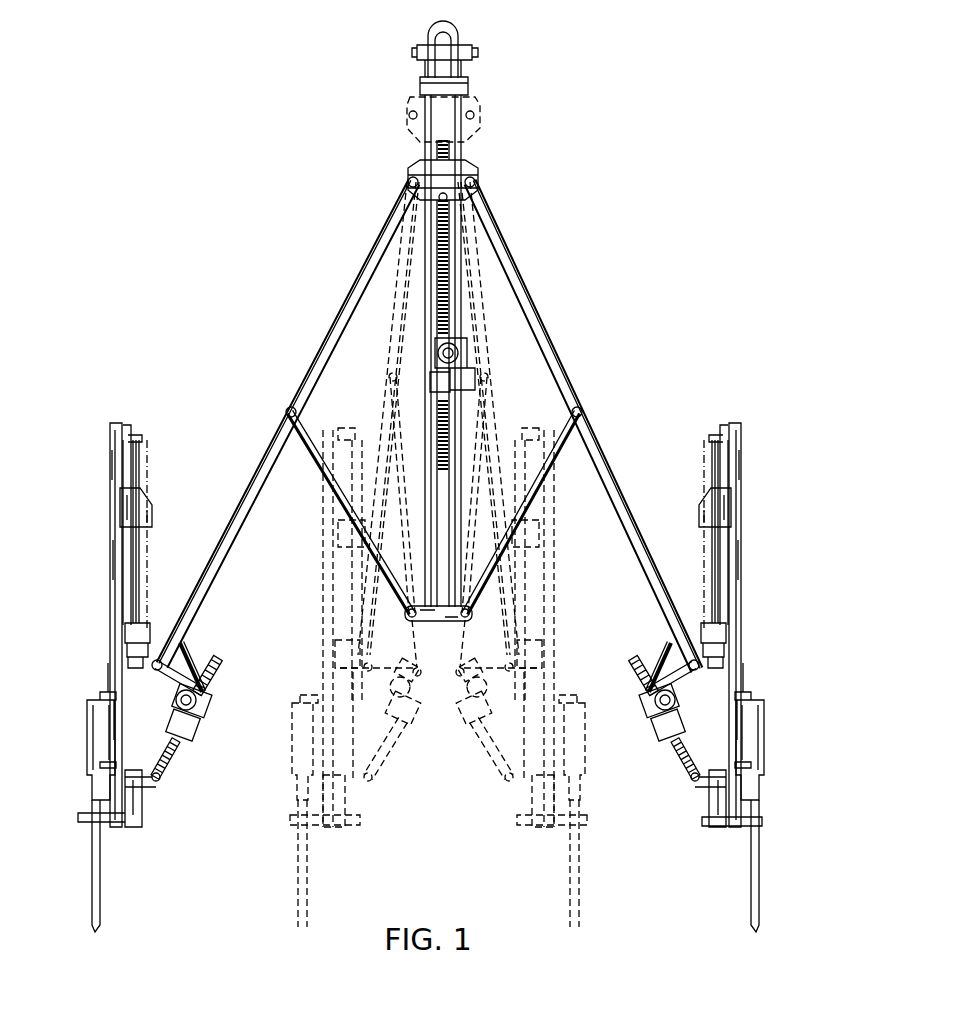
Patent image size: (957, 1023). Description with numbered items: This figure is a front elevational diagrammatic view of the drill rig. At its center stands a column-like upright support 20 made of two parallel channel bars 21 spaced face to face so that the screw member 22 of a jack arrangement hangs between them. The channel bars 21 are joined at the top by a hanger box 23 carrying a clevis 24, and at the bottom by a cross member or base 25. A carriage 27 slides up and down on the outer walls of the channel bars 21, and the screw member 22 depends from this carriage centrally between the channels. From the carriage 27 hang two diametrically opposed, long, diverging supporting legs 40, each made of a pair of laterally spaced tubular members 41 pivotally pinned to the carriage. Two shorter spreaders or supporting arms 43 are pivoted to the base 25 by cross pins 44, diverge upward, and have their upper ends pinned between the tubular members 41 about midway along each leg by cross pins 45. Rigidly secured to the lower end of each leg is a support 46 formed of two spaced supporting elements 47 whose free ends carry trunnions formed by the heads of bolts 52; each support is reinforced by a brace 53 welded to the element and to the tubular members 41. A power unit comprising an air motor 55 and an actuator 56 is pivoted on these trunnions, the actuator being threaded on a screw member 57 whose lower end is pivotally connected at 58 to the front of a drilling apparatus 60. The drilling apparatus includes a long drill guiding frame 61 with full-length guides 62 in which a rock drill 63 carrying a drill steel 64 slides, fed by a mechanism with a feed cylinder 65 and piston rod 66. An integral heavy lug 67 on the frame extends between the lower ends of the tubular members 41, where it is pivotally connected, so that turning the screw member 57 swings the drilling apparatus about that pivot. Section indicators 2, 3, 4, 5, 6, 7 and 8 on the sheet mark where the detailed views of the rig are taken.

The section line 2- 2 is at (781, 22).
The section line 3- 3 is at (230, 727).
The section line 4- 4 is at (785, 703).
The section line 5- 5 is at (482, 612).
The section line 6- 6 is at (460, 428).
The section line 7- 7 is at (537, 167).
The section line 8- 8 is at (508, 197).
The upright support 20 is at (453, 287).
The channel bars 21 is at (433, 478).
The screw member 22 is at (445, 262).
The hanger box 23 is at (457, 89).
The clevis 24 is at (458, 27).
The base 25 is at (440, 621).
The carriage 27 is at (481, 180).
The supporting legs 40 is at (560, 355).
The tubular members 41 is at (536, 325).
The supporting arms 43 is at (562, 425).
The cross pins 44 is at (443, 631).
The cross pins 45 is at (582, 411).
The support 46 is at (638, 649).
The supporting elements 47 is at (645, 683).
The bolts 52 is at (648, 690).
The brace 53 is at (665, 648).
The air motor 55 is at (660, 705).
The actuator 56 is at (668, 730).
The screw member 57 is at (670, 753).
The pivotal connection 58 is at (689, 784).
The drilling apparatus 60 is at (700, 585).
The drill guiding frame 61 is at (730, 622).
The guides 62 is at (112, 582).
The rock drill 63 is at (752, 746).
The drill steel 64 is at (755, 870).
The feed cylinder 65 is at (710, 808).
The piston rod 66 is at (714, 546).
The lug 67 is at (718, 672).